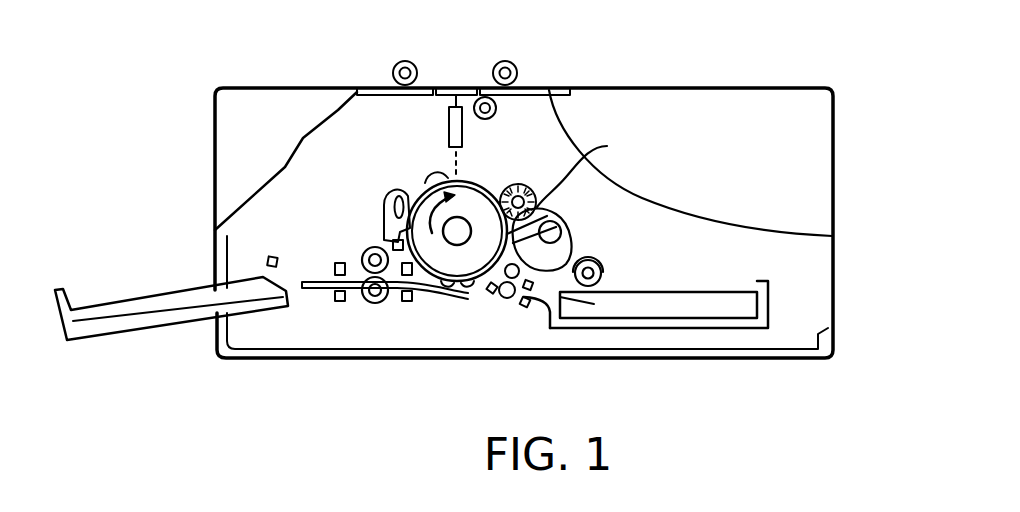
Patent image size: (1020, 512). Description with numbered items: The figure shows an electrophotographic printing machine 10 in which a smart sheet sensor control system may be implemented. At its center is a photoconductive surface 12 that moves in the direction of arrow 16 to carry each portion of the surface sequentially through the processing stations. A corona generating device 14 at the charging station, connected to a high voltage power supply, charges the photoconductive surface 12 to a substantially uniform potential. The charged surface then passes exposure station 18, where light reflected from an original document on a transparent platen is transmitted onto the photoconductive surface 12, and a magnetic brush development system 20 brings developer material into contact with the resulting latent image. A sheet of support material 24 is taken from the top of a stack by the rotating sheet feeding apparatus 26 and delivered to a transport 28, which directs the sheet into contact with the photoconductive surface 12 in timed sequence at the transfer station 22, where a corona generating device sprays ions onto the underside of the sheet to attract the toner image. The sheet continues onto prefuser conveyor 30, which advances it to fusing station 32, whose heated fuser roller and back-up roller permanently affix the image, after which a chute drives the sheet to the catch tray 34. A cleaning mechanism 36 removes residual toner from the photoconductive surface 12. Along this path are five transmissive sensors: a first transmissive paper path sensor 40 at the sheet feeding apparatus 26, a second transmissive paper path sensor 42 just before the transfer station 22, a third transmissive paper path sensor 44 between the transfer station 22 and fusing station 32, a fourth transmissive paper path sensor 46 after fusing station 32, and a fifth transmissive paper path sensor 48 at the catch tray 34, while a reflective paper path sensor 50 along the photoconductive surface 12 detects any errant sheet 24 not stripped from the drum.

The electrophotographic printing machine 10 is at (848, 127).
The photoconductive surface 12 is at (487, 181).
The corona generating device 14 is at (442, 178).
The arrow 16 is at (457, 231).
The exposure station 18 is at (548, 151).
The magnetic brush development system 20 is at (590, 171).
The transfer station 22 is at (463, 296).
The sheet of support material 24 is at (720, 302).
The sheet feeding apparatus 26 is at (600, 259).
The transport 28 is at (590, 293).
The prefuser conveyor 30 is at (397, 302).
The fusing station 32 is at (366, 250).
The catch tray 34 is at (130, 331).
The cleaning mechanism 36 is at (409, 194).
The first transmissive paper path sensor 40 is at (530, 304).
The second transmissive paper path sensor 42 is at (548, 220).
The third transmissive paper path sensor 44 is at (417, 302).
The fourth transmissive paper path sensor 46 is at (340, 298).
The fifth transmissive paper path sensor 48 is at (271, 257).
The reflective paper path sensor 50 is at (389, 225).